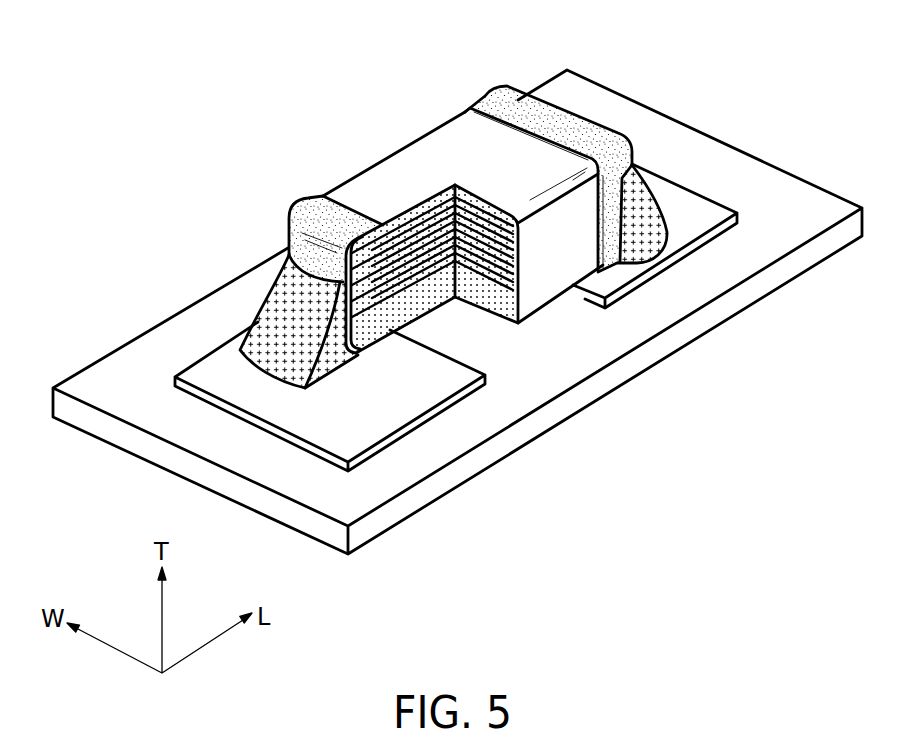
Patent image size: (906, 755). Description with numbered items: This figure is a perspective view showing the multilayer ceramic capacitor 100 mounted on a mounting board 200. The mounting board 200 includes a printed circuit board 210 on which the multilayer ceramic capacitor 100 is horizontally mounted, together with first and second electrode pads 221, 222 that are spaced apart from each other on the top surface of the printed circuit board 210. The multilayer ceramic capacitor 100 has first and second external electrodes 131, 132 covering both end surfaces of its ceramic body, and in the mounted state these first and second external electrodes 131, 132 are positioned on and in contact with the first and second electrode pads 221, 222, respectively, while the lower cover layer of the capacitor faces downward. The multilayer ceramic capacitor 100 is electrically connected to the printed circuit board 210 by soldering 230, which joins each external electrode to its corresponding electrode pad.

The multilayer ceramic capacitor 100 is at (425, 205).
The first external electrode 131 is at (308, 212).
The second external electrode 132 is at (490, 105).
The mounting board 200 is at (457, 309).
The printed circuit board 210 is at (607, 383).
The first electrode pad 221 is at (408, 402).
The second electrode pad 222 is at (683, 207).
The soldering 230 is at (277, 302).